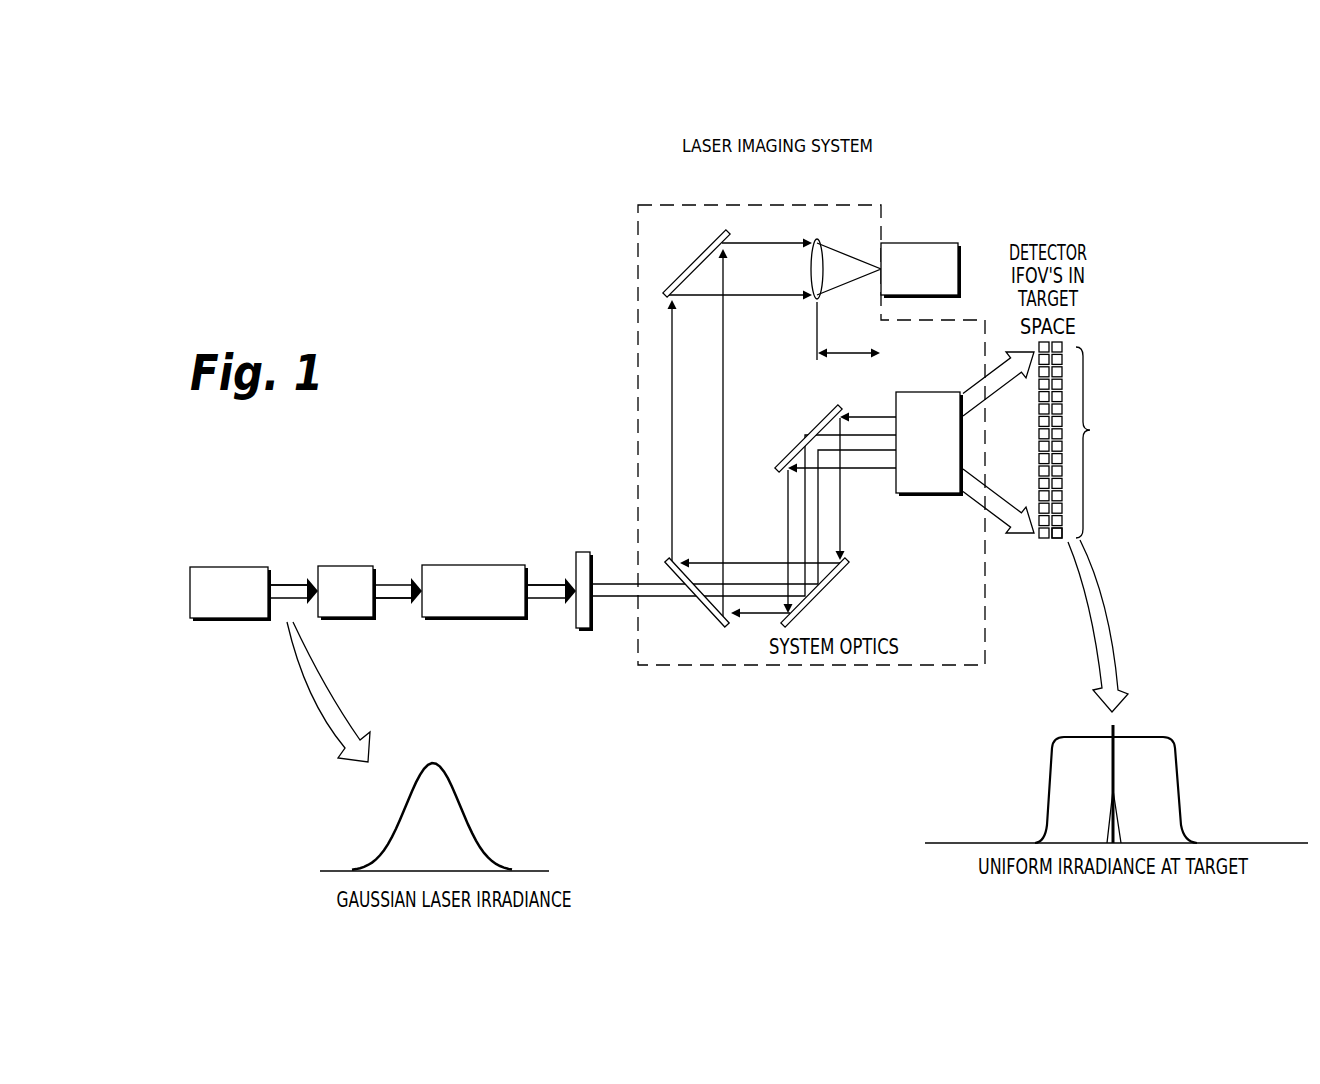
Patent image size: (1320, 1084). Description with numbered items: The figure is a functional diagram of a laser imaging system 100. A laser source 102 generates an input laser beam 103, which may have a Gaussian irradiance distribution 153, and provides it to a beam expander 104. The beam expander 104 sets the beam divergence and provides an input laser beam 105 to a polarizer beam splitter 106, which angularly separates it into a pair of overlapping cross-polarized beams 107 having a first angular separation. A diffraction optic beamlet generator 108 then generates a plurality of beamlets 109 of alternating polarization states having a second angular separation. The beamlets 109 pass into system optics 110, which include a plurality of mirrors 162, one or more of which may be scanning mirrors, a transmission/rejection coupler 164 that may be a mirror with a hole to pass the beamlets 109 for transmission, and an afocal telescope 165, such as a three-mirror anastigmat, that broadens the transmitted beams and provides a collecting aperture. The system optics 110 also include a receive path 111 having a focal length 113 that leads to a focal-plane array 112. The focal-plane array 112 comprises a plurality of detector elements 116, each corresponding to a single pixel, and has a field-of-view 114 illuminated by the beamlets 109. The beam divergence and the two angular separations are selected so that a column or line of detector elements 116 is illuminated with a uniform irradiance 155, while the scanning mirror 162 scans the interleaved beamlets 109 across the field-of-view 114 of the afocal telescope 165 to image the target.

The laser imaging system 100 is at (572, 434).
The laser source 102 is at (208, 567).
The input laser beam 103 is at (292, 583).
The beam expander 104 is at (346, 620).
The input laser beam 105 is at (398, 600).
The polarizer beam splitter 106 is at (446, 565).
The pair of overlapping cross-polarized beams 107 is at (542, 583).
The diffraction optic beamlet generator 108 is at (580, 630).
The beamlets 109 is at (610, 583).
The system optics 110 is at (884, 668).
The receive path 111 is at (850, 256).
The focal-plane array 112 is at (923, 243).
The focal length 113 is at (817, 353).
The field-of-view 114 is at (1082, 440).
The detector elements 116 is at (1058, 540).
The Gaussian irradiance distribution 153 is at (462, 805).
The uniform irradiance 155 is at (1178, 746).
The mirrors 162 is at (700, 260).
The transmission/rejection coupler 164 is at (708, 606).
The afocal telescope 165 is at (918, 498).